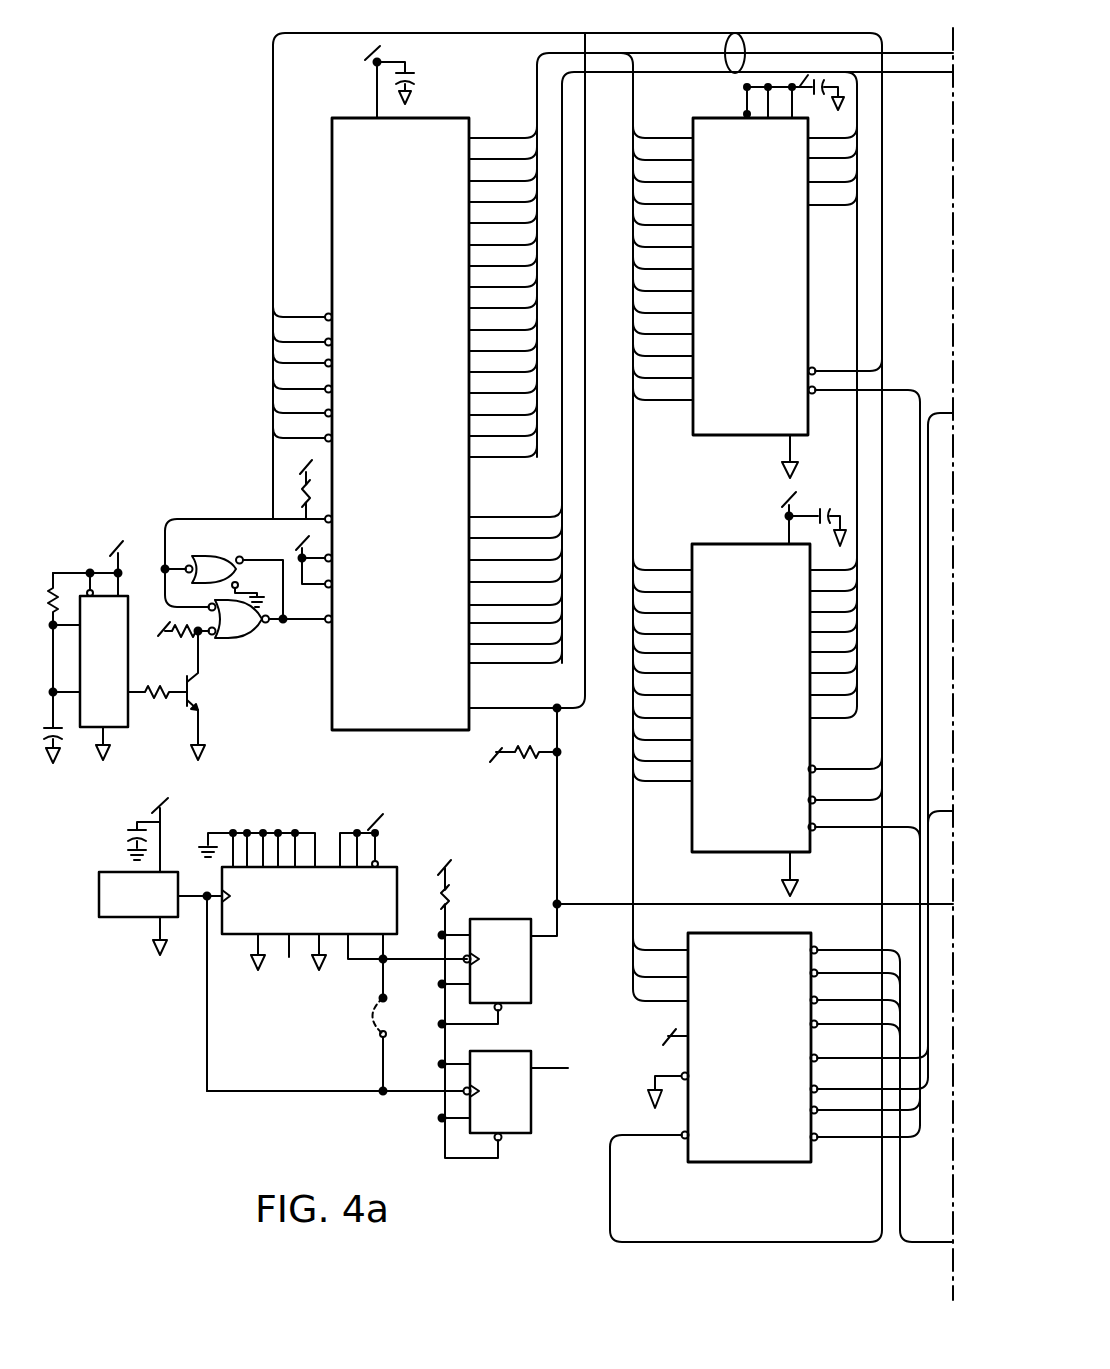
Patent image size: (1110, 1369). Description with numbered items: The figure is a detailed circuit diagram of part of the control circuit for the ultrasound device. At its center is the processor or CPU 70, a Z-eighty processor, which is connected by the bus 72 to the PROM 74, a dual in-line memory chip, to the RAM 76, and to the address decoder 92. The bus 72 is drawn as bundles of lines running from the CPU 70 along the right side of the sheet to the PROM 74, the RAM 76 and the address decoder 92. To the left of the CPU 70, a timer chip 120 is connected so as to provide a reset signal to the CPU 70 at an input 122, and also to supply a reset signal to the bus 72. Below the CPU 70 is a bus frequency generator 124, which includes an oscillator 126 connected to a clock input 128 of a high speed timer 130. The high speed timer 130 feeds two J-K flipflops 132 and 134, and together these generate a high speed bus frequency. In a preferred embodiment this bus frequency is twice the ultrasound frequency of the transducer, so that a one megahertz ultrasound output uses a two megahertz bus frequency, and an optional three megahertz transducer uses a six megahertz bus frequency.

The CPU 70 is at (332, 721).
The bus 72 is at (738, 34).
The PROM 74 is at (722, 118).
The RAM 76 is at (738, 546).
The address decoder 92 is at (748, 1164).
The timer chip 120 is at (130, 728).
The input 122 is at (318, 625).
The bus frequency generator 124 is at (406, 840).
The oscillator 126 is at (110, 917).
The clock input 128 is at (224, 893).
The high speed timer 130 is at (288, 961).
The J-K flipflop 132 is at (500, 919).
The J-K flipflop 134 is at (508, 1051).